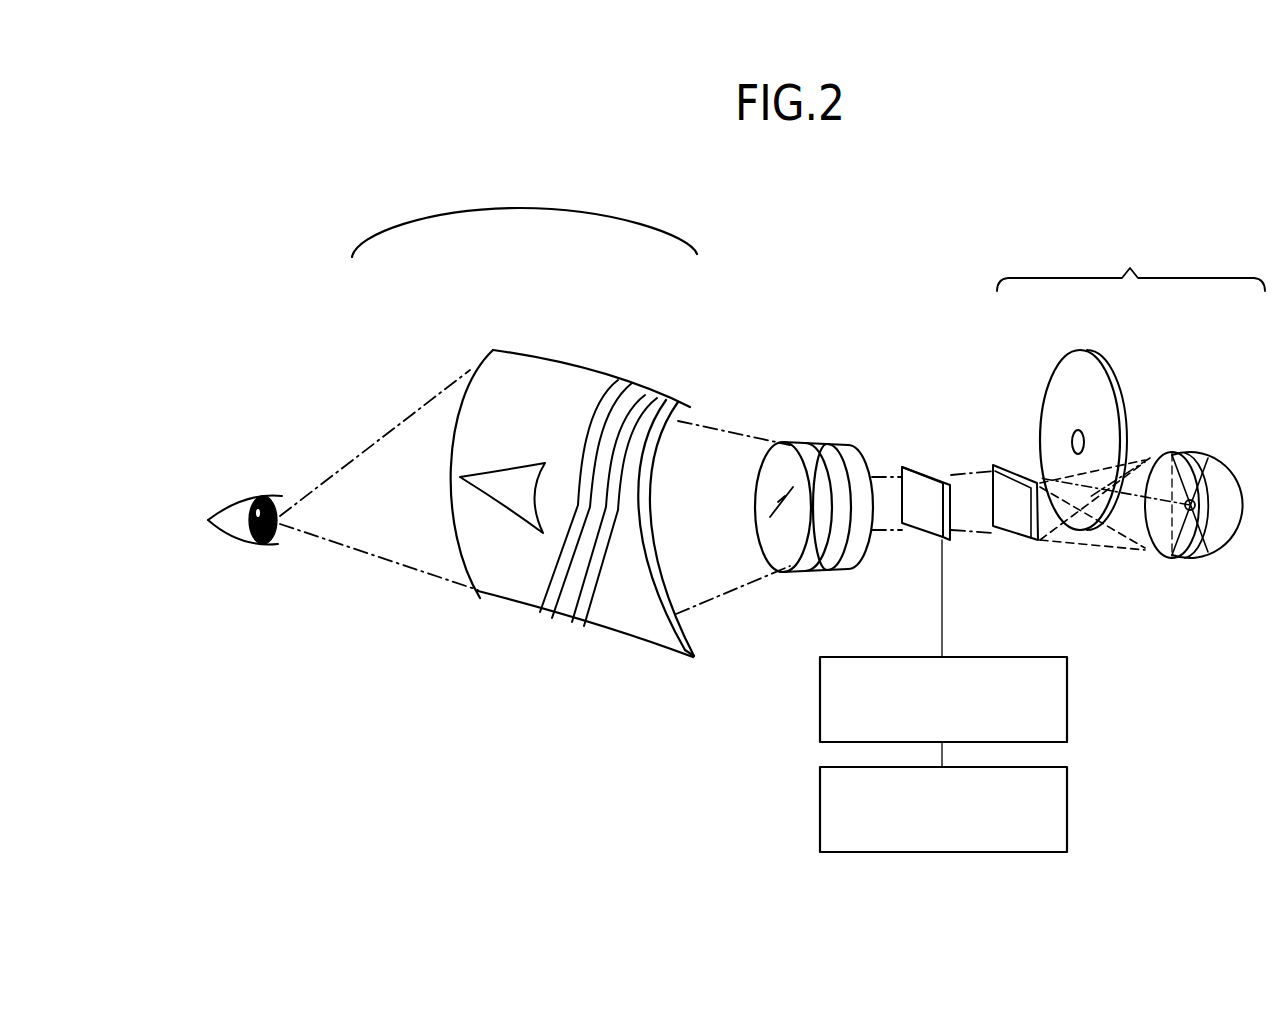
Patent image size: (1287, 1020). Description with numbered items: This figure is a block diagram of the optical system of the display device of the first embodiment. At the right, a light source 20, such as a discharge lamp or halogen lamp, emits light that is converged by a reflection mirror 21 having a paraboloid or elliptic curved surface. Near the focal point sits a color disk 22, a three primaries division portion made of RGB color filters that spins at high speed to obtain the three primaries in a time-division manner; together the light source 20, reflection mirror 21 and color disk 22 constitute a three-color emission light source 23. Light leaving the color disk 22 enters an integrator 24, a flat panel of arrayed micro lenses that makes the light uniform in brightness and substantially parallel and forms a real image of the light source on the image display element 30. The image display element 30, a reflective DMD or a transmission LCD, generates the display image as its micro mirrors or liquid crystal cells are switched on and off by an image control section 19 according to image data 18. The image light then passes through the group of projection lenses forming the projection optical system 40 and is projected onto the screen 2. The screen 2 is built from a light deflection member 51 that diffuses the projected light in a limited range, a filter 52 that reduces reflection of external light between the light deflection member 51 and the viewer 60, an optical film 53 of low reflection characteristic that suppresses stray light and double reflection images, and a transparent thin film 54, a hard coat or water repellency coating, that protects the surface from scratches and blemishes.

The screen 2 is at (520, 208).
The image data 18 is at (820, 809).
The image control section 19 is at (820, 693).
The light source 20 is at (1204, 548).
The reflection mirror 21 is at (1152, 545).
The color disk 22 is at (1072, 375).
The three-color emission light source 23 is at (1131, 258).
The integrator 24 is at (1032, 541).
The image display element 30 is at (925, 460).
The projection optical system 40 is at (808, 440).
The light deflection member 51 is at (616, 607).
The filter 52 is at (612, 432).
The optical film 53 is at (565, 593).
The transparent thin film 54 is at (500, 562).
The viewer 60 is at (236, 506).